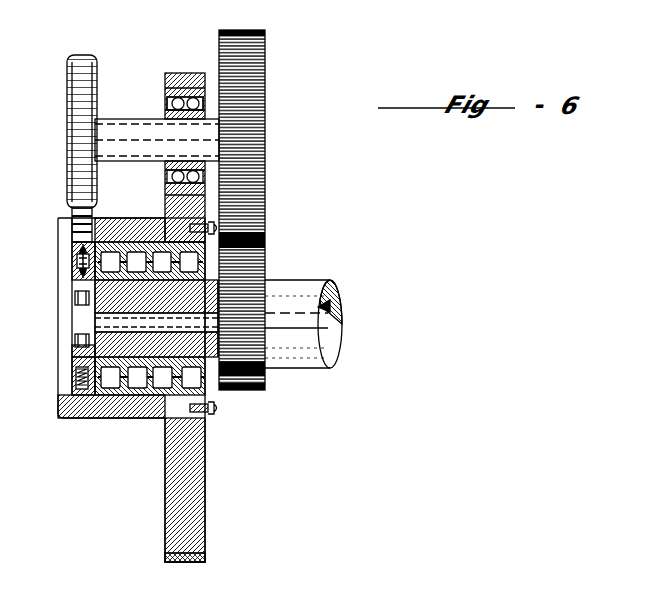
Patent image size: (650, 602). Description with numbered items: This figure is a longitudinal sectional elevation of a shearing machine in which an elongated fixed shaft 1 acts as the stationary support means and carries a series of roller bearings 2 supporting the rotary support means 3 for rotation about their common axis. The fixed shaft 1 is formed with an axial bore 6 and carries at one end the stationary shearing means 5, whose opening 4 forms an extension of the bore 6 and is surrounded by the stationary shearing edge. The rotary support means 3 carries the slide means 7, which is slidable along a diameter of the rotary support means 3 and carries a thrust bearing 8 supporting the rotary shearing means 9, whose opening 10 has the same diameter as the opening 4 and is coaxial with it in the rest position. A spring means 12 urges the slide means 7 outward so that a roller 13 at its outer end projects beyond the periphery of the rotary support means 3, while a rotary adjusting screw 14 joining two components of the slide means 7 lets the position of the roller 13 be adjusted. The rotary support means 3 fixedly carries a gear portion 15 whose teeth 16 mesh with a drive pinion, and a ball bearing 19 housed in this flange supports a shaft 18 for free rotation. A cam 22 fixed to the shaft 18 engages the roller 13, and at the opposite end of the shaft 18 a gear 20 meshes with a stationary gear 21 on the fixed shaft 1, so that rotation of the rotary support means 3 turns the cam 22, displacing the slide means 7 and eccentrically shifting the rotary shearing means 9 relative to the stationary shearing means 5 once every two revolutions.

The fixed shaft 1 is at (310, 358).
The roller bearings 2 is at (110, 256).
The rotary support means 3 is at (75, 412).
The opening 4 is at (263, 376).
The stationary shearing means 5 is at (215, 300).
The axial bore 6 is at (340, 311).
The slide means 7 is at (72, 352).
The thrust bearing 8 is at (75, 298).
The rotary shearing means 9 is at (72, 336).
The opening 10 is at (88, 321).
The spring means 12 is at (76, 380).
The roller 13 is at (72, 234).
The rotary adjusting screw 14 is at (80, 265).
The gear portion 15 is at (186, 461).
The teeth 16 is at (218, 77).
The shaft 18 is at (122, 125).
The ball bearing 19 is at (168, 95).
The gear 20 is at (268, 108).
The stationary gear 21 is at (258, 390).
The cam 22 is at (67, 100).